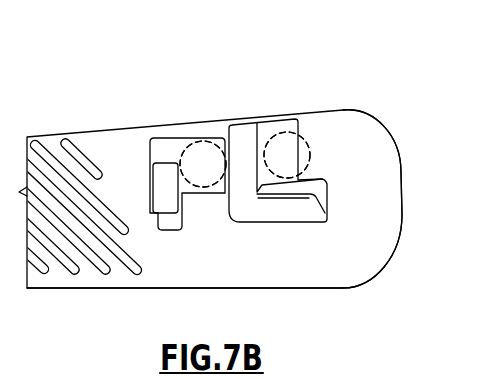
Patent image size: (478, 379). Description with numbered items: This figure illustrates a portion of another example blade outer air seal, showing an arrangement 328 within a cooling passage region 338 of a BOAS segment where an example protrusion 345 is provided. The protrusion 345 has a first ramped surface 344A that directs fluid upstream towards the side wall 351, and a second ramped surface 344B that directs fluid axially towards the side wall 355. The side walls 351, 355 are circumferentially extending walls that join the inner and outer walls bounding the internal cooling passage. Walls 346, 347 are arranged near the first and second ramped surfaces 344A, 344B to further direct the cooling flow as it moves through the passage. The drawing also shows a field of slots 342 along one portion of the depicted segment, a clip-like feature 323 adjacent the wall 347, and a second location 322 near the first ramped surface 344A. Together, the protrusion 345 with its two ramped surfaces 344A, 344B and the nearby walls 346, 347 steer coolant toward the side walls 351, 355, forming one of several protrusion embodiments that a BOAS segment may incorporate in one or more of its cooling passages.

The connector assembly 328 is at (350, 76).
The base housing 338 is at (330, 273).
The side wall 351 is at (402, 200).
The side wall 355 is at (260, 289).
The ventilation slots 342 is at (100, 265).
The spring clip 323 is at (178, 146).
The wall 347 is at (158, 173).
The protrusion 345 is at (198, 163).
The second ramped surface 344B is at (197, 188).
The wall 346 is at (280, 203).
The second aperture 322 is at (310, 149).
The first ramped surface 344A is at (287, 148).